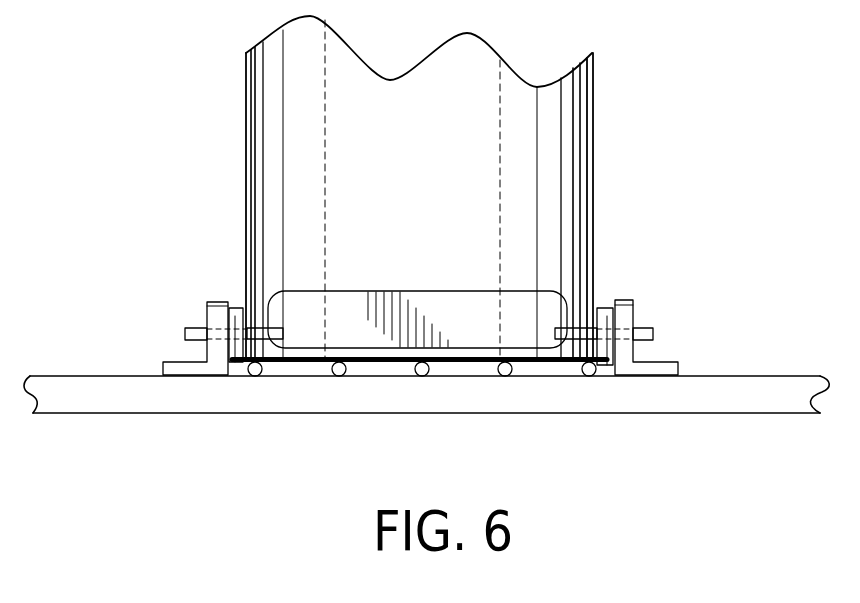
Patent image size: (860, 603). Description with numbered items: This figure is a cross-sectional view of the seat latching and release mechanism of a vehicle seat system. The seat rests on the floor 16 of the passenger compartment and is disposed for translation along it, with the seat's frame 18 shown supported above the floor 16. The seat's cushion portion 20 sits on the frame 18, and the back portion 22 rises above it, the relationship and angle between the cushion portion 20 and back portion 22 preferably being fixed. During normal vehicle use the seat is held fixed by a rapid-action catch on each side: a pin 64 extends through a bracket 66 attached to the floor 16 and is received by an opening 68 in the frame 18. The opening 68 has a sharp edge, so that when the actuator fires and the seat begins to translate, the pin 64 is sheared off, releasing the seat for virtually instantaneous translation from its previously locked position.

The floor 16 is at (718, 400).
The frame 18 is at (236, 363).
The cushion portion 20 is at (330, 333).
The back portion 22 is at (578, 100).
The pin 64 is at (185, 334).
The bracket 66 is at (210, 305).
The opening 68 is at (233, 318).